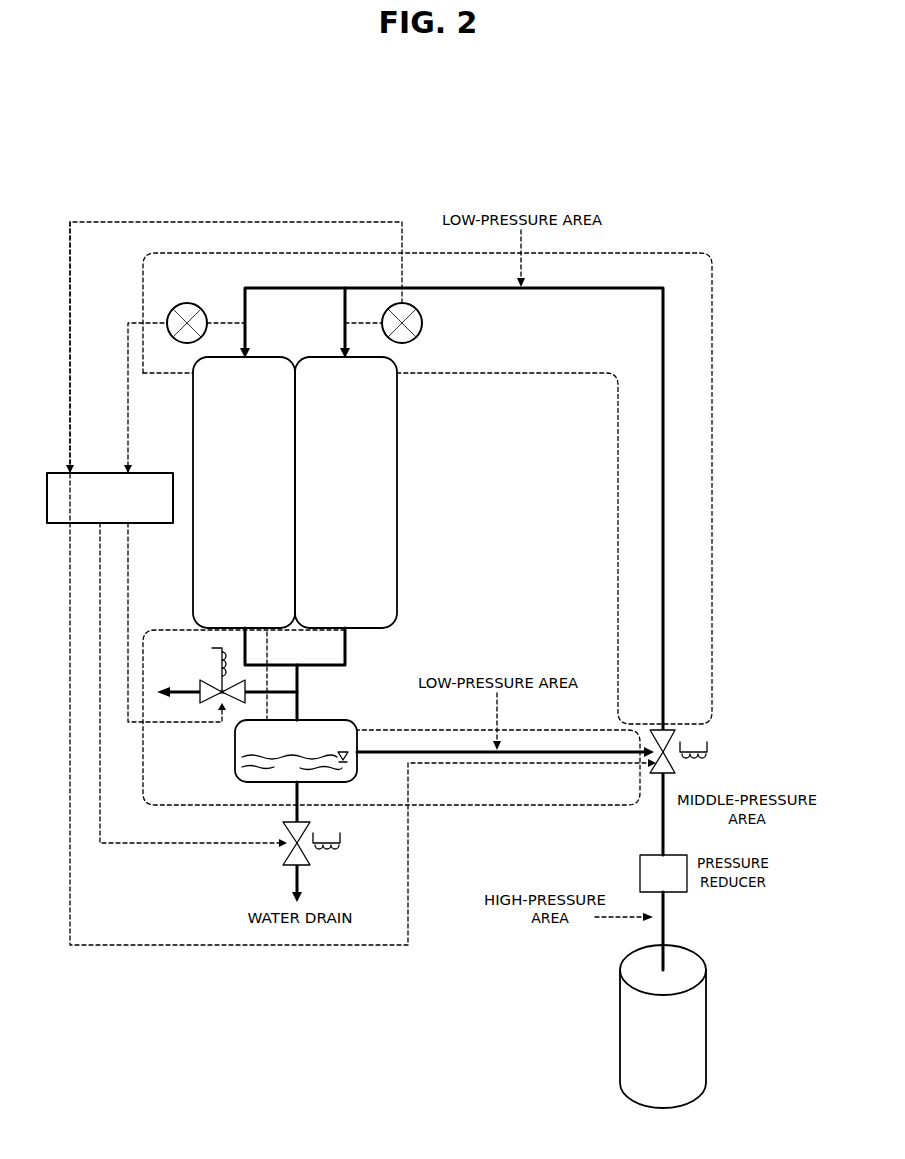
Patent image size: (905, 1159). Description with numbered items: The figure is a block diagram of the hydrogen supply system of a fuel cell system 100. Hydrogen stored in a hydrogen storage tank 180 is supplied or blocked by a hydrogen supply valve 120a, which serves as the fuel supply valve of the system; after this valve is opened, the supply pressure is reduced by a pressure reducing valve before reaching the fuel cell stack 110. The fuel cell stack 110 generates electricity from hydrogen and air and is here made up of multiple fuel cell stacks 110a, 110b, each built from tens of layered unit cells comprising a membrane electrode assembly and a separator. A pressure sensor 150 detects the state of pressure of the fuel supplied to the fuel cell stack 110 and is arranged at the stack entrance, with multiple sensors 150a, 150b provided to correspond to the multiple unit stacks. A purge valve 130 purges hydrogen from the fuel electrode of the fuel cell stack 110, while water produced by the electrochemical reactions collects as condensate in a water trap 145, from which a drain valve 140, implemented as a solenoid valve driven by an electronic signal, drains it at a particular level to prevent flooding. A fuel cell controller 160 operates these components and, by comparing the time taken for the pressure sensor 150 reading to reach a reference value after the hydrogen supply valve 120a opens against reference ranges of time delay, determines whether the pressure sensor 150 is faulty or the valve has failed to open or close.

The fuel cell system 100 is at (200, 116).
The fuel cell stack 110 is at (295, 461).
The fuel cell stack 110a is at (265, 357).
The fuel cell stack 110b is at (346, 477).
The hydrogen supply valve 120a is at (675, 768).
The purge valve 130 is at (215, 680).
The drain valve 140 is at (310, 858).
The water trap 145 is at (325, 720).
The pressure sensor 150 is at (294, 246).
The pressure sensor 150a is at (185, 303).
The pressure sensor 150b is at (395, 262).
The fuel cell controller 160 is at (152, 473).
The hydrogen storage tank 180 is at (700, 952).